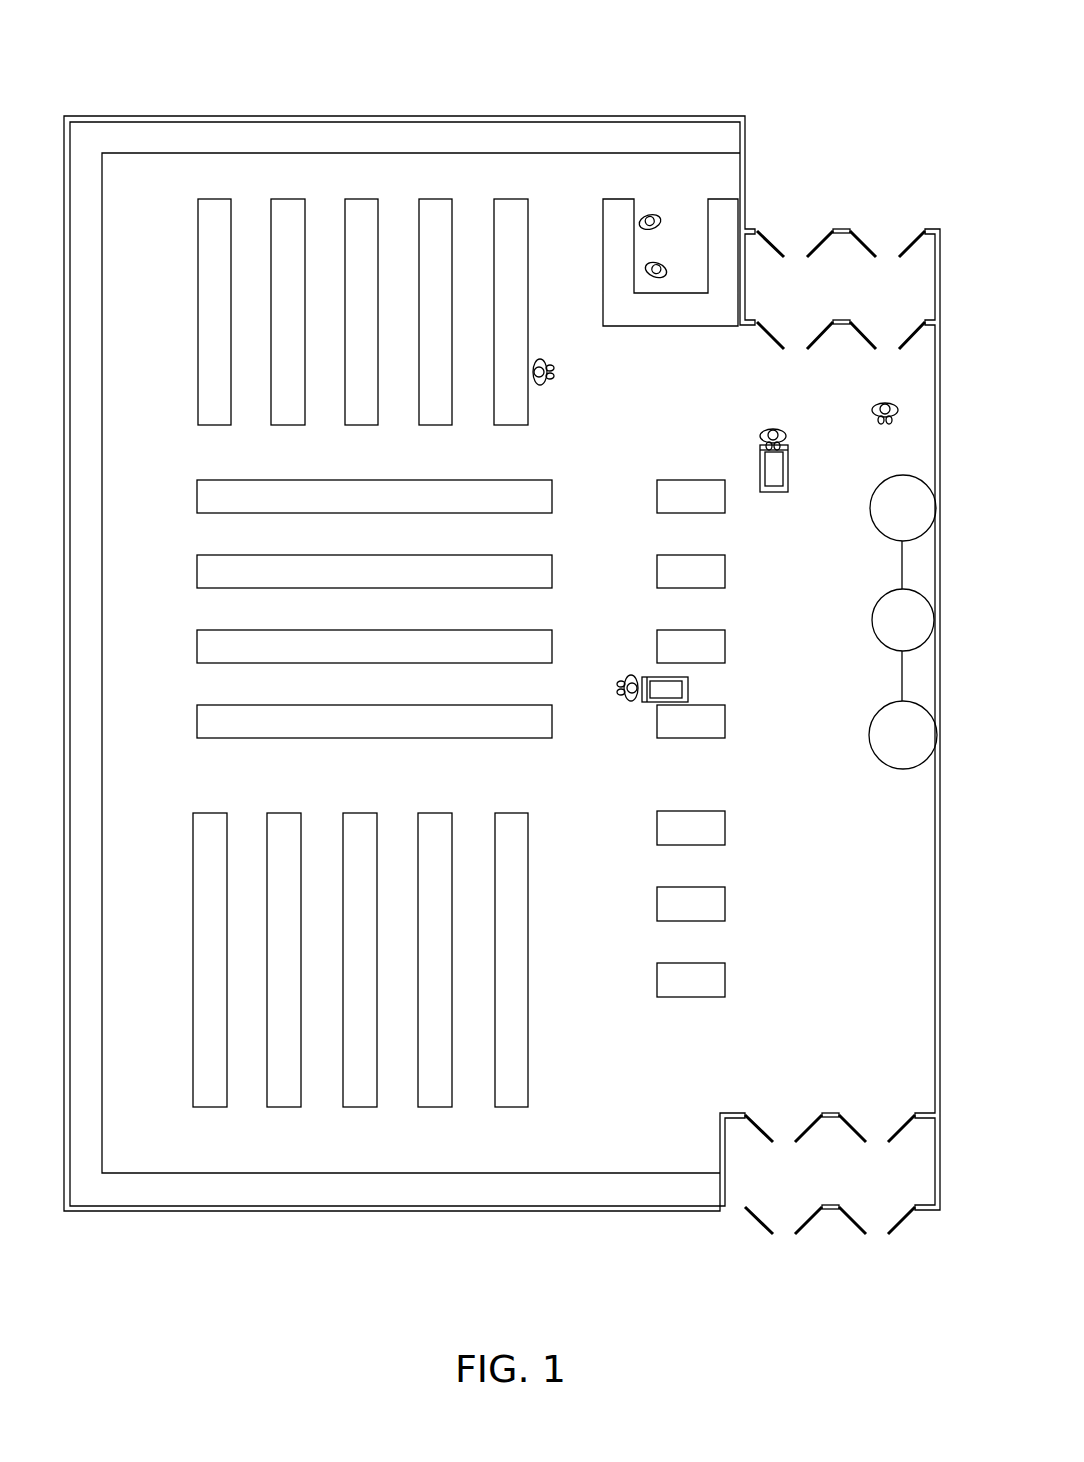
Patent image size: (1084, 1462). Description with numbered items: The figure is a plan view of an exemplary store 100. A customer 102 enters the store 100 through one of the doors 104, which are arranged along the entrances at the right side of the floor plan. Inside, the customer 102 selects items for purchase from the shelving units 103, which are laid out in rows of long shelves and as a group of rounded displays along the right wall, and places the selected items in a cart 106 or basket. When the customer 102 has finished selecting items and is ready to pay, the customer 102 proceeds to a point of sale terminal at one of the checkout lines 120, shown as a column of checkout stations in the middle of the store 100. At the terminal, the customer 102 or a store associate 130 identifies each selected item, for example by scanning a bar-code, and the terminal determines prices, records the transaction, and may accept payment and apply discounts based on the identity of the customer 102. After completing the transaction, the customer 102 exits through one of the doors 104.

The store 100 is at (795, 44).
The customer 102 is at (770, 428).
The shelving units 103 is at (522, 333).
The doors 104 is at (776, 335).
The cart 106 is at (788, 475).
The checkout line 120 is at (710, 991).
The store associate 130 is at (552, 378).